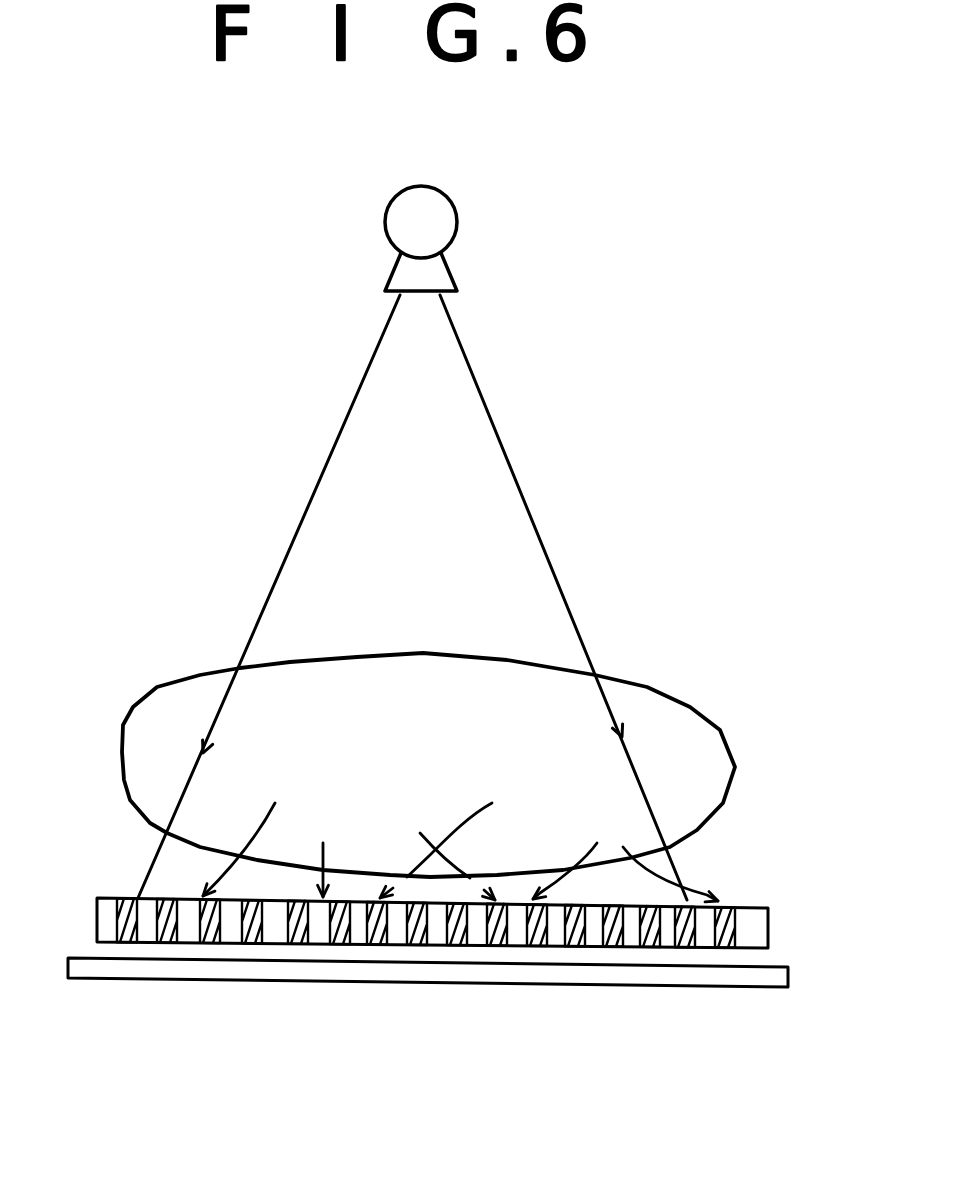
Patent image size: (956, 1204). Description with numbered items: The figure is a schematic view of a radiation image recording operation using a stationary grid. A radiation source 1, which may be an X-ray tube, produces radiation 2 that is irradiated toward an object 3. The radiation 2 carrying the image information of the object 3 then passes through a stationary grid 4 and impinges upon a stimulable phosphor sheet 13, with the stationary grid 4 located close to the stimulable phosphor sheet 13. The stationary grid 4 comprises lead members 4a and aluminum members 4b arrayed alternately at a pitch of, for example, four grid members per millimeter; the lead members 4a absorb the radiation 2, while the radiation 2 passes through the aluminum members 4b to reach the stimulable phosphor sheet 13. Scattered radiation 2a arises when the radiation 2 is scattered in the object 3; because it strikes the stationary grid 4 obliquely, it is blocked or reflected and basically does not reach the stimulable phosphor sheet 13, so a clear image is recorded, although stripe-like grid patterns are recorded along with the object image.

The radiation source 1 is at (452, 216).
The radiation 2 is at (505, 450).
The scattered radiation 2a is at (460, 823).
The object 3 is at (647, 687).
The stationary grid 4 is at (461, 936).
The lead members 4a is at (572, 950).
The aluminum members 4b is at (672, 950).
The stimulable phosphor sheet 13 is at (188, 970).